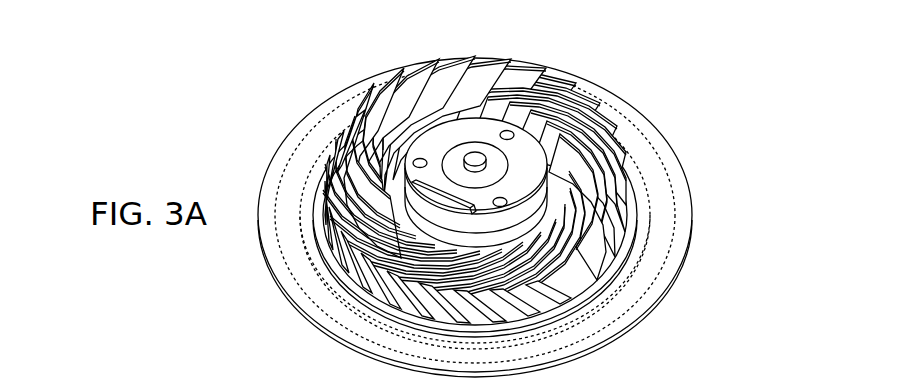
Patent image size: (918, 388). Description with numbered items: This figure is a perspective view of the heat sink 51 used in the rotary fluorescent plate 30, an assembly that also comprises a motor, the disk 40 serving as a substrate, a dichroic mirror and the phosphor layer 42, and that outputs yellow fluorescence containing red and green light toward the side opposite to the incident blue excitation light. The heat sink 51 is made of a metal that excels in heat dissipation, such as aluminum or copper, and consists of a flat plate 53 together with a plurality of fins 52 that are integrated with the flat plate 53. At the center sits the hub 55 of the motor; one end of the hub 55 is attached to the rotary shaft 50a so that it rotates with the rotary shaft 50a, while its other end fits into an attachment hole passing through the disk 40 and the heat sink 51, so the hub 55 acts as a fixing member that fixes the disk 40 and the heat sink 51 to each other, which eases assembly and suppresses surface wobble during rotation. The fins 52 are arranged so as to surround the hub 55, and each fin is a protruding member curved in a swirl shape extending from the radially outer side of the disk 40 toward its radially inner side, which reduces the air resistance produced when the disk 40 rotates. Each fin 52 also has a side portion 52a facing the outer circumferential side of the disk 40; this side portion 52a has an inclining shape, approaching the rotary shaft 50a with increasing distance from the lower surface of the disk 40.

The rotary fluorescent plate 30 is at (569, 75).
The disk 40 is at (588, 348).
The phosphor layer 42 is at (668, 144).
The rotary shaft 50a is at (471, 156).
The heat sink 51 is at (737, 262).
The fins 52 is at (612, 245).
The side portion 52a is at (328, 222).
The flat plate 53 is at (617, 277).
The hub 55 is at (432, 146).